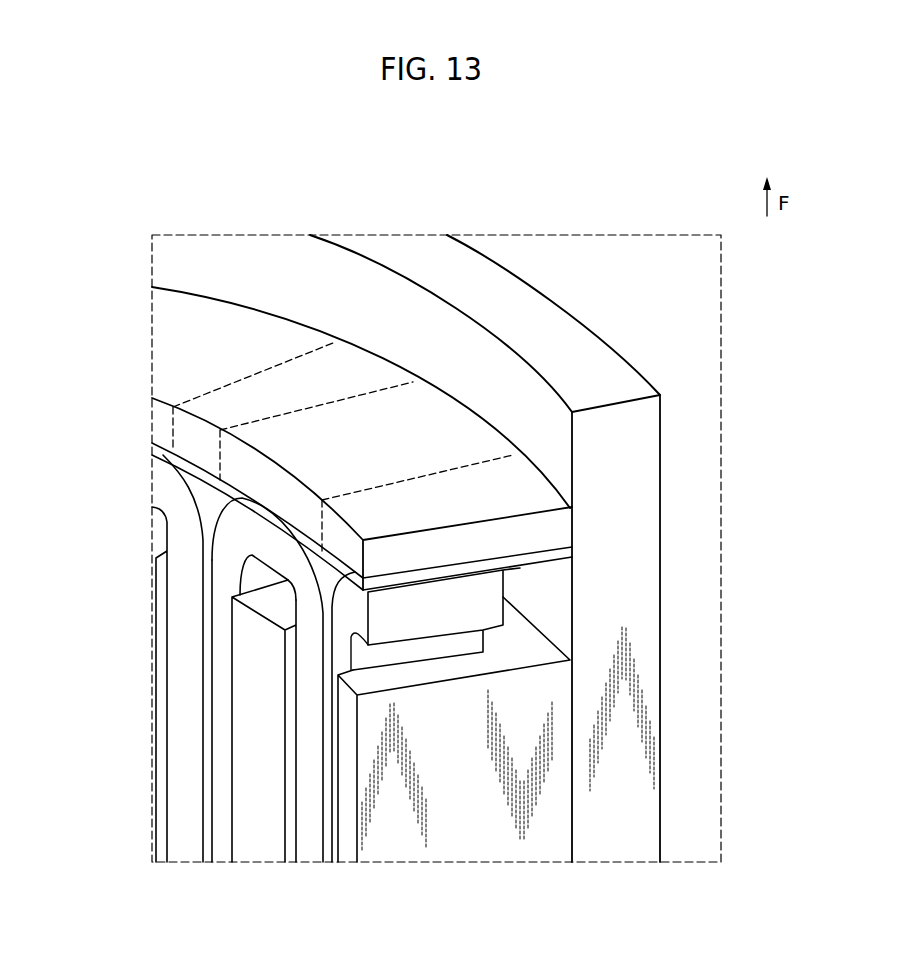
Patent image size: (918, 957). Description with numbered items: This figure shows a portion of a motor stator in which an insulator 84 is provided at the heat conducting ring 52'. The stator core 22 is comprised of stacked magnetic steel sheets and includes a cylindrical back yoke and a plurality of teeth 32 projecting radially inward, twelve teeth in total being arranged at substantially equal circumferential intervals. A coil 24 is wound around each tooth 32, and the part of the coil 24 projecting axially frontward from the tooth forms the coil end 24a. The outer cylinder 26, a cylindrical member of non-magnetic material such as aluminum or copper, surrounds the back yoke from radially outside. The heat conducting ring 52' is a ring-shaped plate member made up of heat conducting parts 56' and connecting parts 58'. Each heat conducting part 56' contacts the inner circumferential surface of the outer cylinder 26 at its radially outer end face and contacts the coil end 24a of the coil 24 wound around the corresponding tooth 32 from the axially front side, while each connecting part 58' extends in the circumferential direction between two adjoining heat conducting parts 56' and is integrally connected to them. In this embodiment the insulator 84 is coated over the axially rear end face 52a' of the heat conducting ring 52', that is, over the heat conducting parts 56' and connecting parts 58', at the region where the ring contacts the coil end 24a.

The stator core 22 is at (578, 800).
The coil 24 is at (222, 853).
The coil end 24a is at (270, 530).
The outer cylinder 26 is at (557, 340).
The teeth 32 is at (248, 683).
The heat conducting ring 52' is at (362, 359).
The axially rear end face 52a' is at (470, 516).
The heat conducting part 56' is at (366, 365).
The connecting part 58' is at (288, 314).
The insulator 84 is at (520, 570).